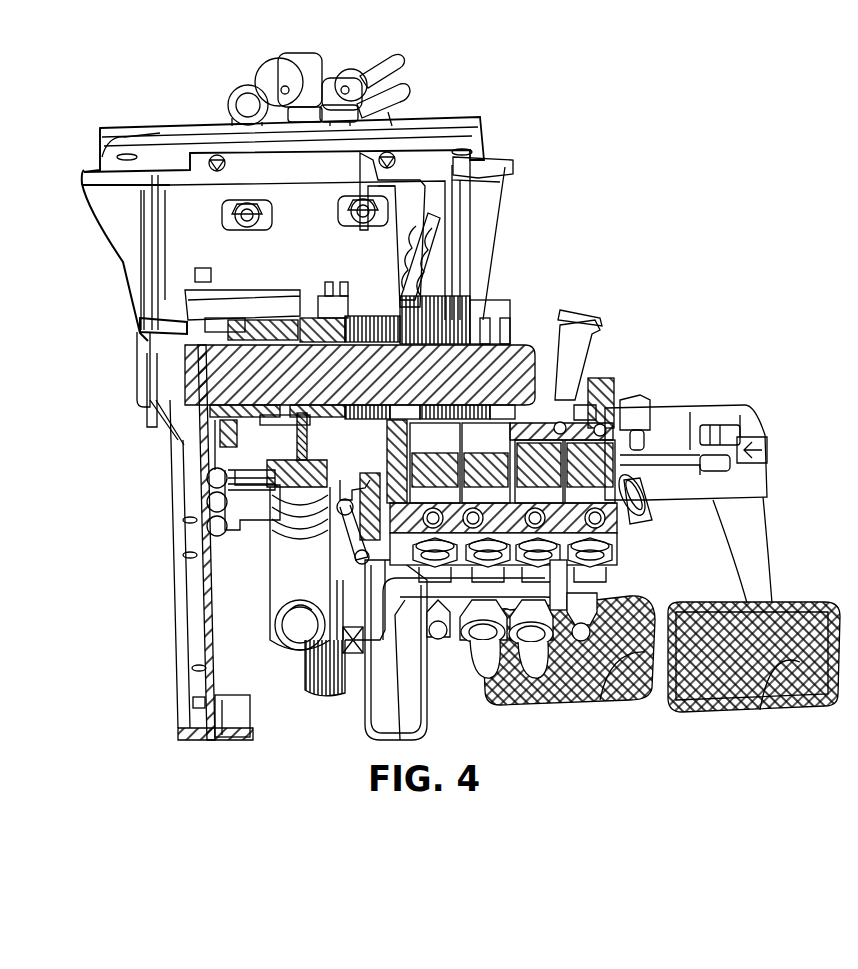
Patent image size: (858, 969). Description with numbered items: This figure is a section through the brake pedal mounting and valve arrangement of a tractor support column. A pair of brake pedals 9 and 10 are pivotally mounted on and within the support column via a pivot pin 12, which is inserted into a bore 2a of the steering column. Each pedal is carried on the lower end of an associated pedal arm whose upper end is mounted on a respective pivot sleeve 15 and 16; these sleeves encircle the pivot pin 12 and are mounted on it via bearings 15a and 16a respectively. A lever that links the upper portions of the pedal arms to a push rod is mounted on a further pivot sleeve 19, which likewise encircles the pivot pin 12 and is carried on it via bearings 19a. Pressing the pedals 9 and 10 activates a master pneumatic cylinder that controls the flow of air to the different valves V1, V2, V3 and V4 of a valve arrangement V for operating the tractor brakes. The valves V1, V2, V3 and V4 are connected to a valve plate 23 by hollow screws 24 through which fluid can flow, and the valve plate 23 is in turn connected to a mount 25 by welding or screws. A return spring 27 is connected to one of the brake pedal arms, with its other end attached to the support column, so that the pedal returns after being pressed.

The bore 2a is at (175, 352).
The brake pedal 9 is at (652, 705).
The brake pedal 10 is at (790, 710).
The pivot pin 12 is at (187, 367).
The pivot sleeve 15 is at (345, 300).
The bearings 15a is at (400, 262).
The pivot sleeve 16 is at (482, 320).
The bearings 16a is at (468, 296).
The pivot sleeve 19 is at (265, 335).
The bearings 19a is at (308, 330).
The valve plate 23 is at (640, 490).
The hollow screws 24 is at (600, 550).
The mount 25 is at (312, 645).
The return spring 27 is at (578, 340).
The valve arrangement V is at (515, 423).
The valve V1 is at (435, 463).
The valve V2 is at (486, 463).
The valve V3 is at (539, 473).
The valve V4 is at (590, 473).